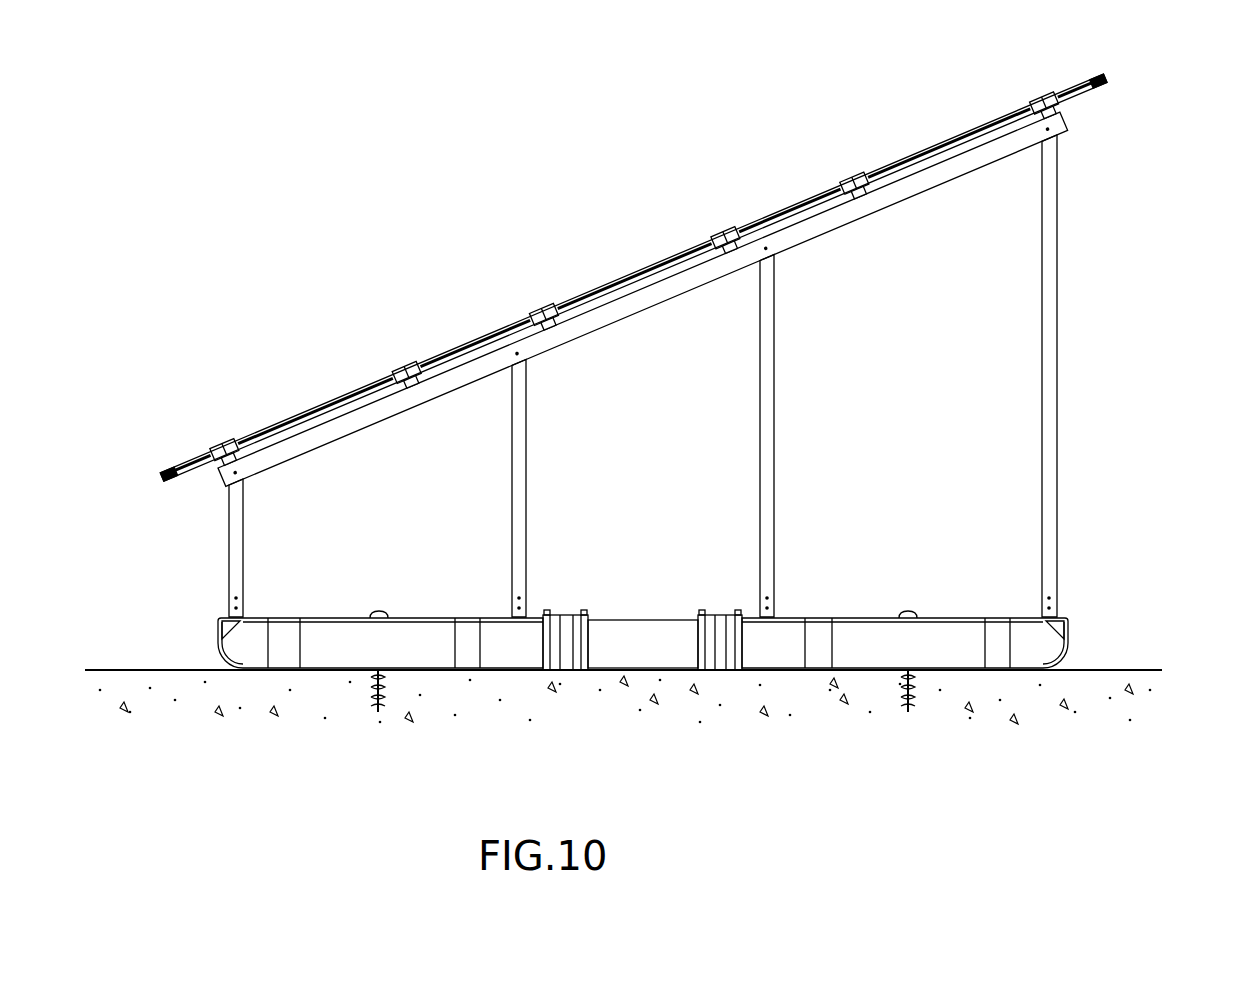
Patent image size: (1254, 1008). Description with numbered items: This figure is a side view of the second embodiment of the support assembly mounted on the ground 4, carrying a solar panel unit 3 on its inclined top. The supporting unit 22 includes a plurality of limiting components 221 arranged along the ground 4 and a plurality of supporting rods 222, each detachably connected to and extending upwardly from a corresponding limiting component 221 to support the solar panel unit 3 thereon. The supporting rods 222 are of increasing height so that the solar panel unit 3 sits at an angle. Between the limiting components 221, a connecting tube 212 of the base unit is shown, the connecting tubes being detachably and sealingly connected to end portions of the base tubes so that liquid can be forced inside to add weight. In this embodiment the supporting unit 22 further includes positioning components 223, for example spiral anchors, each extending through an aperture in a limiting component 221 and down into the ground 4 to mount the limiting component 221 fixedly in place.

The solar panel unit 3 is at (556, 236).
The supporting unit 22 is at (1075, 271).
The supporting rod 222 is at (1058, 373).
The limiting component 221 is at (217, 623).
The positioning component 223 is at (377, 712).
The connecting tube 212 is at (672, 657).
The ground 4 is at (1118, 685).